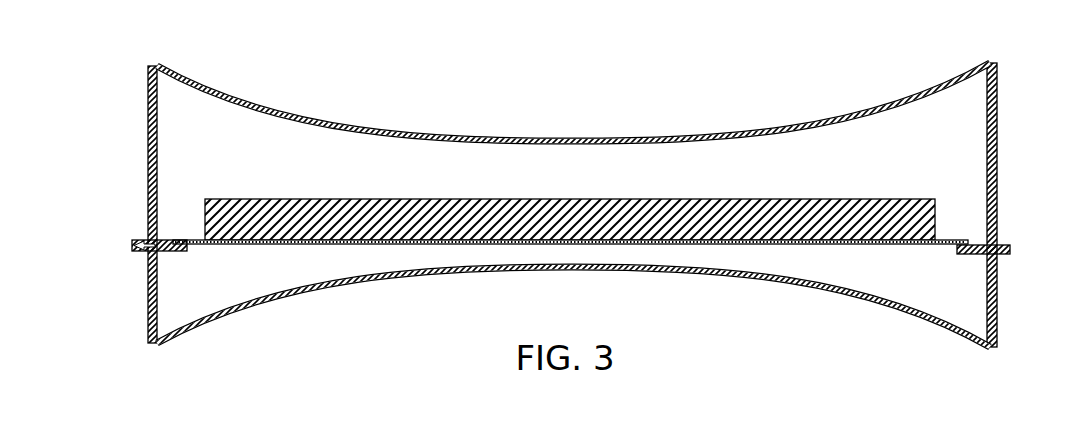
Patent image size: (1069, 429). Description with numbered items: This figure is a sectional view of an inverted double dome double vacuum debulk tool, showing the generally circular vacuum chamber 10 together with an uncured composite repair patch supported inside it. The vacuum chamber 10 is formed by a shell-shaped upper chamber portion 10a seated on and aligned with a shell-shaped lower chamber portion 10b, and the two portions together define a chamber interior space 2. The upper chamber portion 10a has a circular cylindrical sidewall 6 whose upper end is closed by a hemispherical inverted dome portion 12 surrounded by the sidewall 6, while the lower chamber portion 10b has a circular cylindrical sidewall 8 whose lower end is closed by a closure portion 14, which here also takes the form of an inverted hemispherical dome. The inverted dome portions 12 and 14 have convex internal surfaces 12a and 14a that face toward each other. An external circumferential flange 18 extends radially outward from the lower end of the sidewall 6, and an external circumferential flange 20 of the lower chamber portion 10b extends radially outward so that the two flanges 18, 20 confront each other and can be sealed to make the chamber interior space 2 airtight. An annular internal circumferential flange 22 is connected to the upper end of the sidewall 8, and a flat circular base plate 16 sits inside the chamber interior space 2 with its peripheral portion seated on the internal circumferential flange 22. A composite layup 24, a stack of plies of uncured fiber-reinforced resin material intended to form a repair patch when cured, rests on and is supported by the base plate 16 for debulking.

The chamber interior space 2 is at (172, 141).
The sidewall 6 is at (997, 117).
The sidewall 8 is at (997, 295).
The vacuum chamber 10 is at (778, 70).
The upper chamber portion 10a is at (618, 134).
The lower chamber portion 10b is at (673, 280).
The inverted dome portion 12 is at (297, 121).
The convex internal surface 12a is at (308, 128).
The closure portion 14 is at (355, 281).
The convex internal surface 14a is at (316, 282).
The base plate 16 is at (840, 246).
The external circumferential flange 18 is at (1000, 245).
The external circumferential flange 20 is at (1003, 255).
The internal circumferential flange 22 is at (976, 255).
The composite layup 24 is at (748, 199).